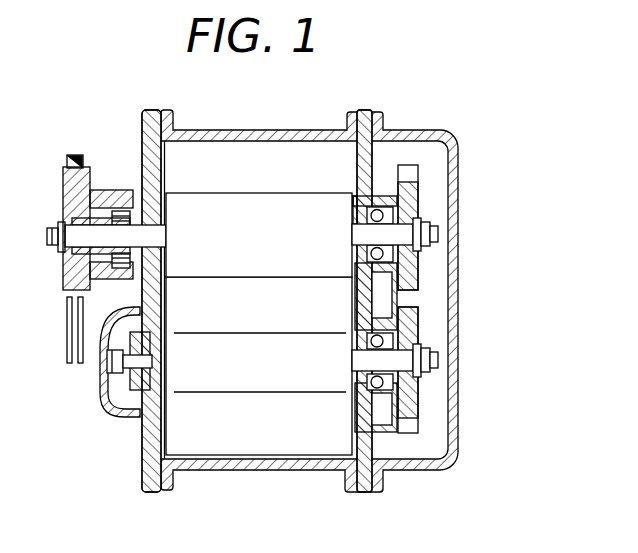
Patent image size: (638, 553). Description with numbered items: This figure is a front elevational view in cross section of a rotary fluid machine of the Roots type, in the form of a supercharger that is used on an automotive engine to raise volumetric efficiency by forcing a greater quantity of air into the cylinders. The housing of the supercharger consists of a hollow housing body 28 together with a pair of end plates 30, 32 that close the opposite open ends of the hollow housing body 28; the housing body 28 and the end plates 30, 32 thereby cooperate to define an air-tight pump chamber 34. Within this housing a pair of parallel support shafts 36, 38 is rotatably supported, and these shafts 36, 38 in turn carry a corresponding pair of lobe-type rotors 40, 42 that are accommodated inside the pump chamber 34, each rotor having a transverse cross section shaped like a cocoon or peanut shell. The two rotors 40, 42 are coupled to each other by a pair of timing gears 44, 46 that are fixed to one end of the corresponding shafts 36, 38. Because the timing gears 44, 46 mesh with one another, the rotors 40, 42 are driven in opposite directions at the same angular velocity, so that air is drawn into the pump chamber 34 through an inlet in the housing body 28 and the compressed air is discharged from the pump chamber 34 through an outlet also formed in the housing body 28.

The hollow housing body 28 is at (228, 134).
The end plate 30 is at (150, 450).
The end plate 32 is at (363, 487).
The pump chamber 34 is at (272, 177).
The support shaft 36 is at (402, 235).
The support shaft 38 is at (402, 362).
The lobe-type rotor 40 is at (320, 202).
The lobe-type rotor 42 is at (247, 437).
The timing gear 44 is at (410, 190).
The timing gear 46 is at (408, 410).